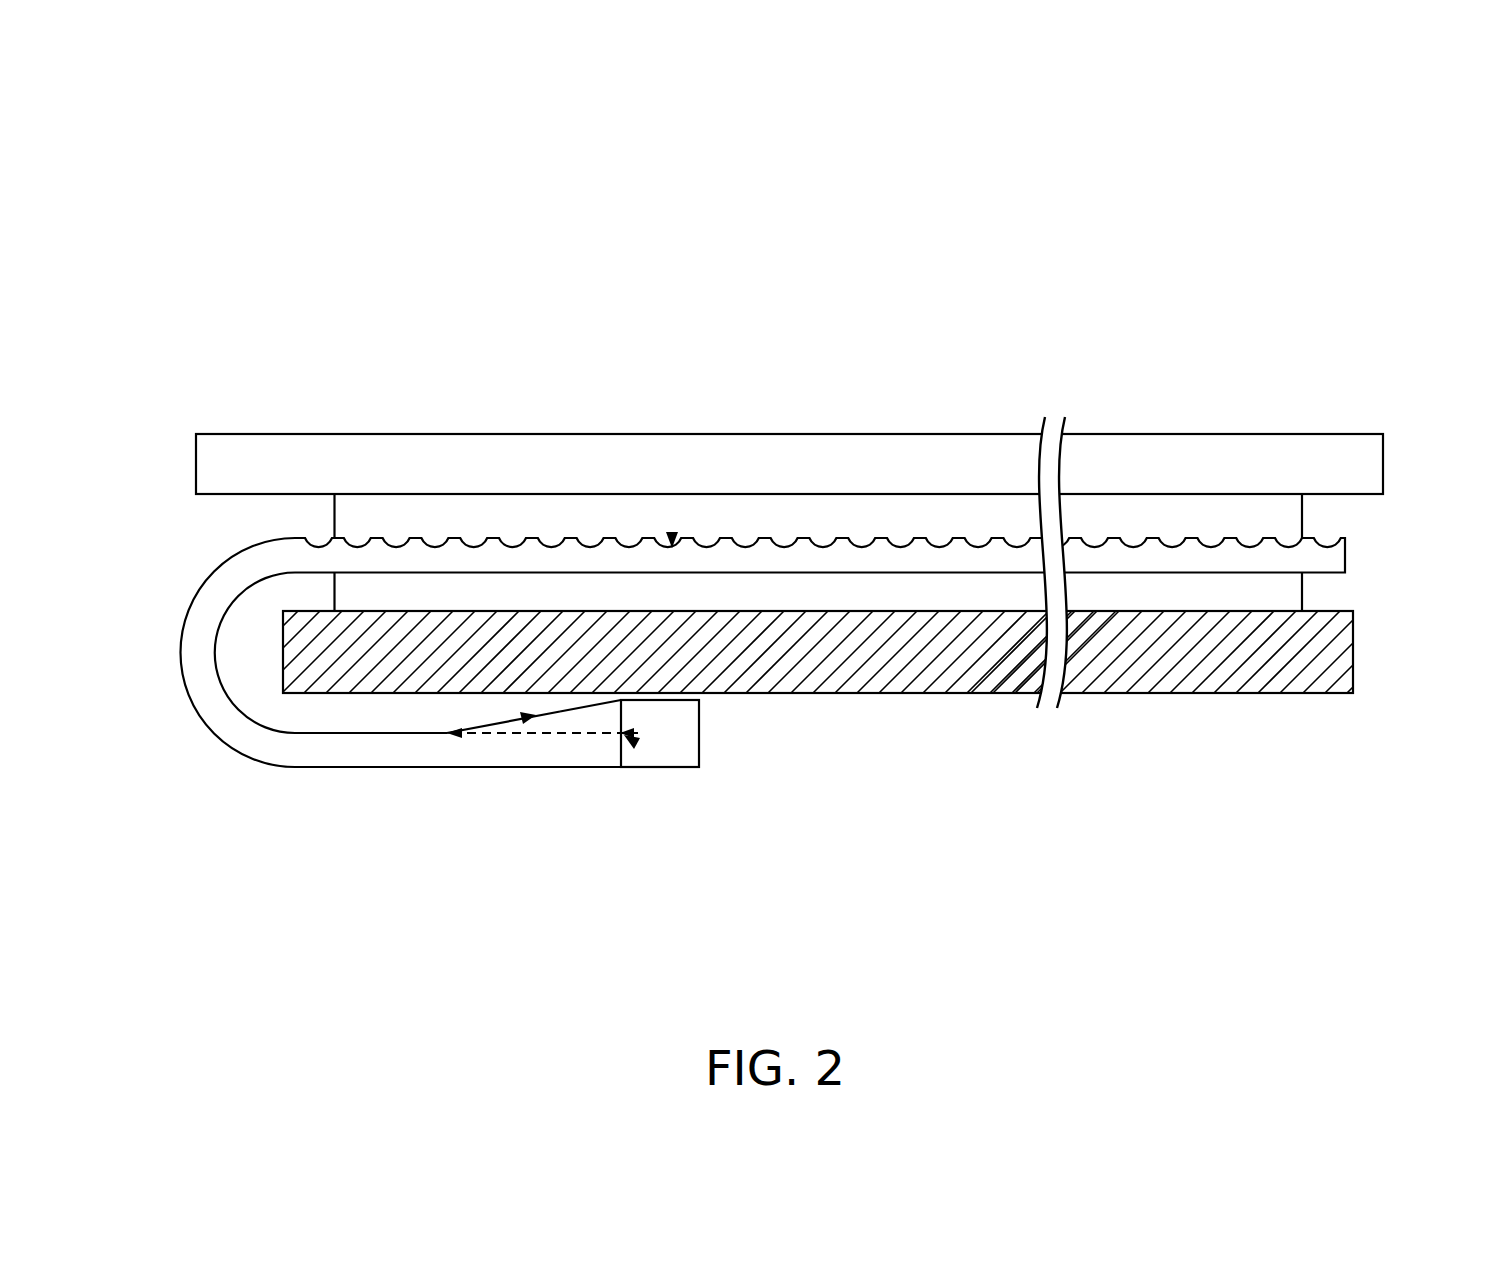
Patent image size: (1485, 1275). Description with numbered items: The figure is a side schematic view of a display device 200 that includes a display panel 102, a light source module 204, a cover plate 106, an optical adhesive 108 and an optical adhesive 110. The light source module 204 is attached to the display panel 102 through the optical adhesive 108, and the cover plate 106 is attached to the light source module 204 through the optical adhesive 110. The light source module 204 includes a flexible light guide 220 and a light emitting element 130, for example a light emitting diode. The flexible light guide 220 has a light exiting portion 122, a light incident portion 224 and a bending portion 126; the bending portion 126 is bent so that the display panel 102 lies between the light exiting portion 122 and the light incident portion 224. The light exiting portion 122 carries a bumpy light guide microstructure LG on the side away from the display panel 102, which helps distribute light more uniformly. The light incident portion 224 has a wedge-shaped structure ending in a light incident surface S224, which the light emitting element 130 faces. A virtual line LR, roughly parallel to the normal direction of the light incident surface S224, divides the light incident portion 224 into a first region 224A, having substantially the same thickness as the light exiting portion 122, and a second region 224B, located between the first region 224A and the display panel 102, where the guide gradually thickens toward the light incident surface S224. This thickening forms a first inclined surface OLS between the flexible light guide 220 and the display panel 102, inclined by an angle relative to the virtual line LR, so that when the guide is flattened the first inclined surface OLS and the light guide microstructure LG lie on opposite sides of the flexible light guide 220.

The display panel 102 is at (1337, 657).
The cover plate 106 is at (1372, 467).
The optical adhesive 108 is at (1282, 593).
The optical adhesive 110 is at (1282, 521).
The light exiting portion 122 is at (592, 557).
The bending portion 126 is at (253, 562).
The light emitting element 130 is at (695, 753).
The display device 200 is at (1402, 953).
The light source module 204 is at (187, 215).
The flexible light guide 220 is at (257, 182).
The light incident portion 224 is at (458, 559).
The first region 224A is at (592, 755).
The second region 224B is at (573, 722).
The light incident surface S224 is at (634, 741).
The light guide microstructure LG is at (672, 536).
The first inclined surface OLS is at (528, 714).
The virtual line LR is at (466, 735).